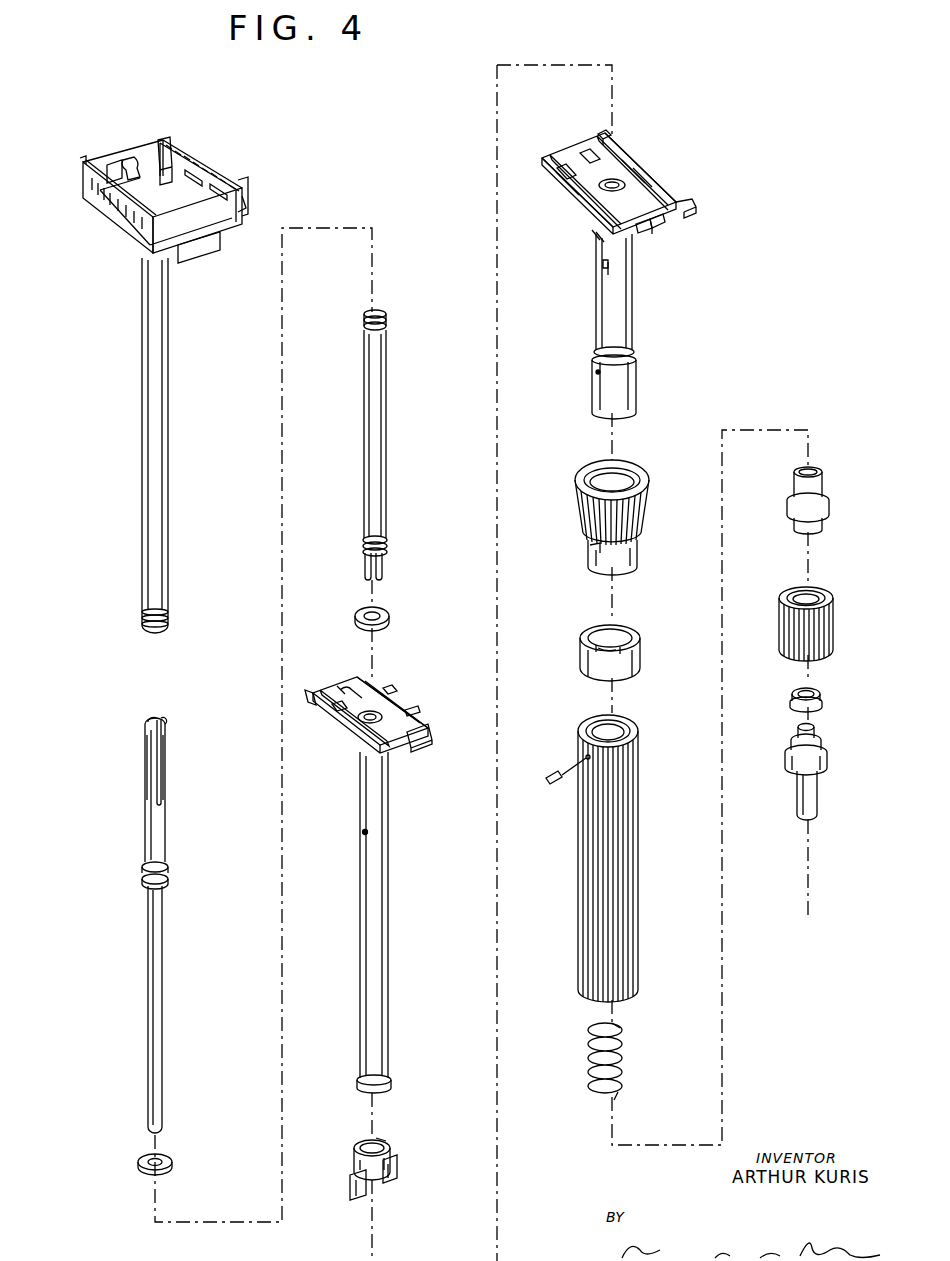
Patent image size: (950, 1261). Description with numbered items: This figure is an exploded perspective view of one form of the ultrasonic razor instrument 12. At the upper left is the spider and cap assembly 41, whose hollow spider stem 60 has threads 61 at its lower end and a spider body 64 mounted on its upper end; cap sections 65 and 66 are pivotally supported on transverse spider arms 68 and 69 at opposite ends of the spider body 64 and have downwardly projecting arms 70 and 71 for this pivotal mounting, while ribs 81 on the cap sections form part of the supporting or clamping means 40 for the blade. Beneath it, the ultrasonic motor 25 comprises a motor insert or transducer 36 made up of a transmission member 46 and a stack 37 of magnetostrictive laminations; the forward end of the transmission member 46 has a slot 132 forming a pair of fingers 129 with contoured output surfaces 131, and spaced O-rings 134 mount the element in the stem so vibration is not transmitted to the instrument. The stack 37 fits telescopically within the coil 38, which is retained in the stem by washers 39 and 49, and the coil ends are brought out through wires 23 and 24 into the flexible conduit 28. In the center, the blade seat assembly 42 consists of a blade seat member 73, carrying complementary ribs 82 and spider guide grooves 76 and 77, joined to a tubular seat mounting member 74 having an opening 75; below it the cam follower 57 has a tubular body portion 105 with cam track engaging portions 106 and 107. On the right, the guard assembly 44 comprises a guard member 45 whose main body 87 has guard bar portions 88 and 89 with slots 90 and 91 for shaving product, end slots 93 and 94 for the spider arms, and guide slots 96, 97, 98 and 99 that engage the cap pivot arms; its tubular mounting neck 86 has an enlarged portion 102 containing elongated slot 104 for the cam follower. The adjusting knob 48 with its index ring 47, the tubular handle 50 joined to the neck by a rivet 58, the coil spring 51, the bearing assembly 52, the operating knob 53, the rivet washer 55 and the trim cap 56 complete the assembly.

The instrument 12 is at (171, 198).
The wire 23 is at (368, 445).
The wire 24 is at (366, 572).
The ultrasonic motor 25 is at (164, 938).
The flexible conduit 28 is at (818, 810).
The motor insert or transducer 36 is at (165, 880).
The stack of magnetostrictive laminations 37 is at (158, 1038).
The coil 38 is at (387, 320).
The washer 39 is at (172, 1163).
The supporting means or clamping means 40 is at (246, 188).
The spider and cap assembly 41 is at (171, 362).
The blade seat assembly 42 is at (447, 801).
The guard assembly 44 is at (631, 252).
The guard member 45 is at (588, 160).
The transmission member 46 is at (164, 780).
The index ring 47 is at (640, 644).
The adjusting knob 48 is at (647, 517).
The washer 49 is at (389, 617).
The tubular handle 50 is at (616, 858).
The coil spring 51 is at (624, 1069).
The bearing assembly 52 is at (824, 488).
The operating knob 53 is at (836, 632).
The rivet washer 55 is at (824, 700).
The trim cap 56 is at (839, 779).
The cam follower 57 is at (387, 1173).
The rivet 58 is at (553, 782).
The hollow spider stem 60 is at (184, 445).
The threads 61 is at (170, 620).
The spider body 64 is at (137, 165).
The cap section 65 is at (212, 160).
The cap section 66 is at (100, 205).
The transverse spider arm 68 is at (115, 172).
The transverse spider arm 69 is at (200, 260).
The downwardly projecting arm 70 is at (160, 165).
The downwardly projecting arm 71 is at (243, 222).
The blade seat member 73 is at (383, 711).
The tubular seat mounting member 74 is at (388, 805).
The opening 75 is at (362, 834).
The spider guide groove 76 is at (420, 745).
The spider guide groove 77 is at (342, 690).
The ribs 81 is at (195, 170).
The complementary ribs 82 is at (385, 690).
The tubular mounting neck 86 is at (604, 326).
The main body 87 is at (660, 222).
The guard bar portion 88 is at (675, 182).
The guard bar portion 89 is at (572, 190).
The elongated slots 90 is at (650, 170).
The slots 91 is at (548, 172).
The elongated slot 93 is at (648, 225).
The elongated slot 94 is at (588, 154).
The guide slot 96 is at (684, 210).
The guide slot 97 is at (608, 268).
The guide slot 98 is at (603, 138).
The guide slot 99 is at (565, 168).
The enlarged portion 102 is at (592, 236).
The elongated slot 104 is at (598, 271).
The tubular body portion 105 is at (383, 1141).
The cam track engaging portion 106 is at (400, 1172).
The cam track engaging portion 107 is at (352, 1200).
The fingers 129 is at (184, 768).
The output surfaces 131 is at (150, 720).
The groove or slot 132 is at (161, 790).
The O-rings 134 is at (146, 867).